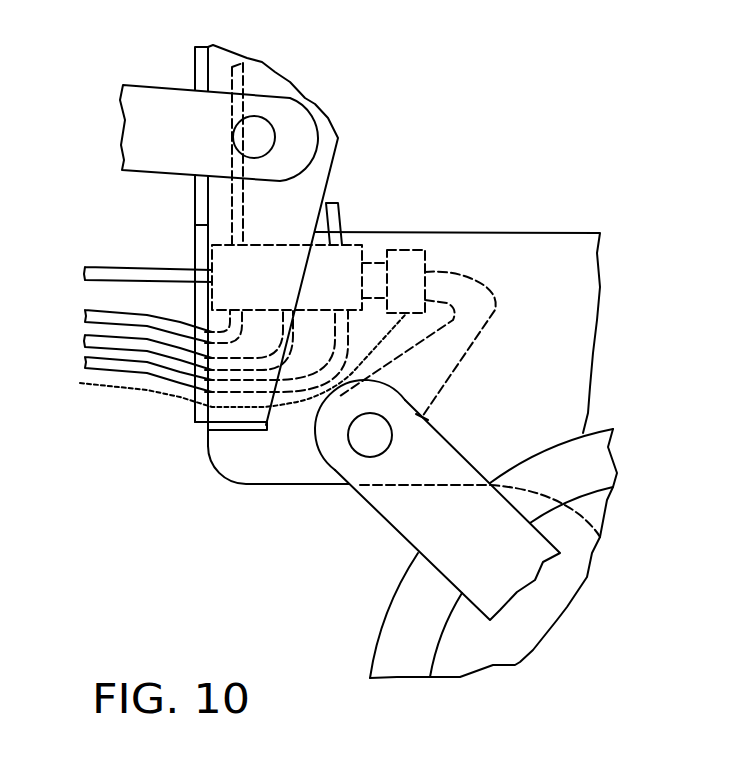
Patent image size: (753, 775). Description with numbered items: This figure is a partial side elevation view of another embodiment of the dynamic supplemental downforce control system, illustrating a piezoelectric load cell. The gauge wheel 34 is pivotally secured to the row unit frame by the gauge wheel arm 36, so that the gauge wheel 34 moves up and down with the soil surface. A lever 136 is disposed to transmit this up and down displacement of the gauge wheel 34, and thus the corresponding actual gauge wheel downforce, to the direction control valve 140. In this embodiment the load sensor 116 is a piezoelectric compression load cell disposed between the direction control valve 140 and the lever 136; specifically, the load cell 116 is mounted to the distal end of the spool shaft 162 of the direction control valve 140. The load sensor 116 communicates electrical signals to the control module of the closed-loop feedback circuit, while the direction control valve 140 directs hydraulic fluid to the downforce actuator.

The direction control valve 140 is at (352, 245).
The spool shaft 162 is at (372, 270).
The load sensor 116 is at (413, 250).
The lever 136 is at (455, 345).
The gauge wheel arm 36 is at (408, 522).
The gauge wheel 34 is at (397, 630).